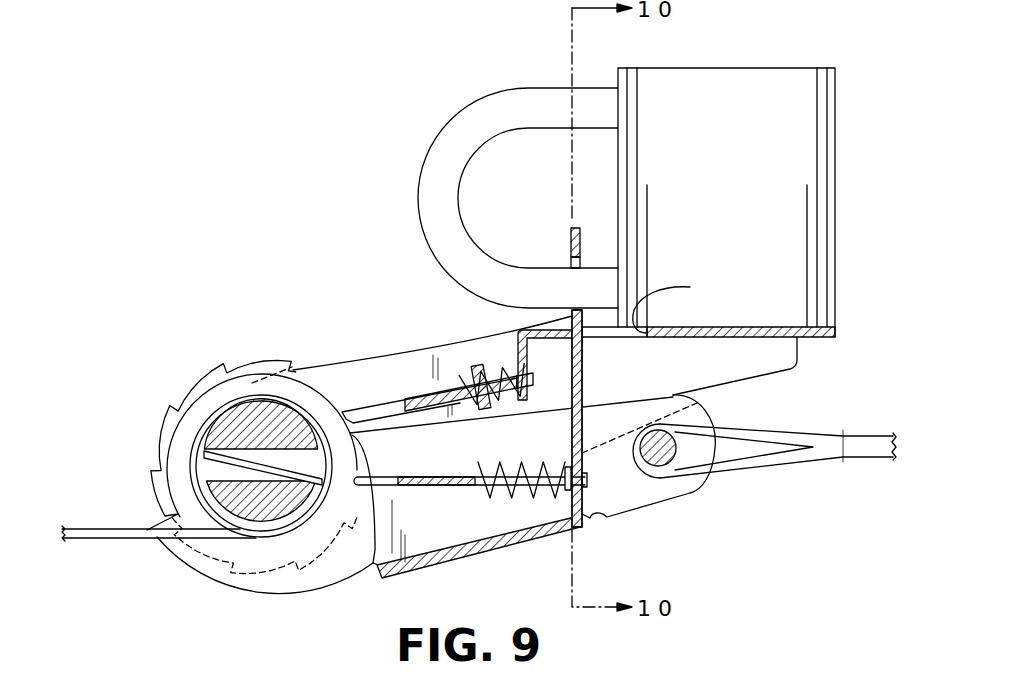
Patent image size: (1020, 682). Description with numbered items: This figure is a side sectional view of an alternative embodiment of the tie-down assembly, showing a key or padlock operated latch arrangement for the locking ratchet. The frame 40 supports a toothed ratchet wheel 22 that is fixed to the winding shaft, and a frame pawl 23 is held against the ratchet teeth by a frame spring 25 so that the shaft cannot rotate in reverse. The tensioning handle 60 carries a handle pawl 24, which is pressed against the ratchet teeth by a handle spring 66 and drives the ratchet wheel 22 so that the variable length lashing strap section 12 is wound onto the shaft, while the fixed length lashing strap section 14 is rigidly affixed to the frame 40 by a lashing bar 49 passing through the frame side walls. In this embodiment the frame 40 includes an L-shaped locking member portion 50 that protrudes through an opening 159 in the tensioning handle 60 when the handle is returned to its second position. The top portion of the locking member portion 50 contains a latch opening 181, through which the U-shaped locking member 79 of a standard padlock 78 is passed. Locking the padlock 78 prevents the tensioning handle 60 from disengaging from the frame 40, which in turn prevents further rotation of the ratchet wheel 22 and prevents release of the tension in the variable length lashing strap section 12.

The variable length lashing strap section 12 is at (107, 540).
The fixed length lashing strap section 14 is at (863, 434).
The ratchet wheel 22 is at (205, 366).
The frame pawl 23 is at (358, 574).
The handle pawl 24 is at (345, 412).
The frame spring 25 is at (548, 497).
The frame 40 is at (648, 517).
The lashing bar 49 is at (680, 455).
The locking member portion 50 is at (583, 378).
The tensioning handle 60 is at (808, 368).
The handle spring 66 is at (462, 388).
The padlock 78 is at (750, 142).
The U-shaped locking member 79 is at (450, 118).
The opening 159 is at (660, 305).
The latch opening 181 is at (571, 321).